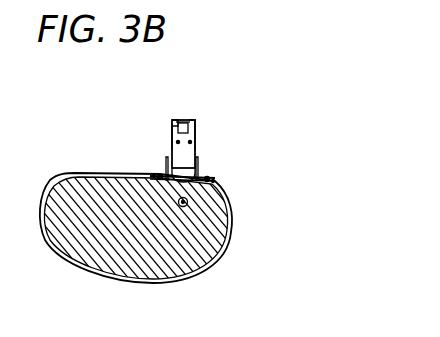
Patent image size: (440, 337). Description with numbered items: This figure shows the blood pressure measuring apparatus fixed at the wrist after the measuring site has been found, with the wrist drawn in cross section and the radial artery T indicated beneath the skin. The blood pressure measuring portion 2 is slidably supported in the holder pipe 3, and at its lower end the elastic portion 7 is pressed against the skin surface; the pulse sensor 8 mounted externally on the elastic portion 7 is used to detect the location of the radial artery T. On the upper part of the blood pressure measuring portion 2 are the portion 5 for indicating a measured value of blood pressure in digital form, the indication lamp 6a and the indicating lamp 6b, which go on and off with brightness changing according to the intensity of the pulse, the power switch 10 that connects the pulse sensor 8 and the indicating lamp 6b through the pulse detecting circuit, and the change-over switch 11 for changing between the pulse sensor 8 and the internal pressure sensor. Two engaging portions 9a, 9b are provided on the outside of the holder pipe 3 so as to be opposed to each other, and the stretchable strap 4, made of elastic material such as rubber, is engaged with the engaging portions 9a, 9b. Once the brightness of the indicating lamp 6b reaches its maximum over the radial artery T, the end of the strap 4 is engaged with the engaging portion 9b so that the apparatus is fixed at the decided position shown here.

The blood pressure measuring portion 2 is at (171, 145).
The holder pipe 3 is at (201, 158).
The strap 4 is at (165, 284).
The portion for indicating a measured value of blood pressure 5 is at (197, 121).
The indication lamp 6a is at (172, 129).
The indicating lamp 6b is at (197, 135).
The elastic portion 7 is at (210, 168).
The pulse sensor 8 is at (166, 171).
The engaging portion 9a is at (158, 174).
The engaging portion 9b is at (212, 178).
The power switch 10 is at (172, 123).
The change-over switch 11 is at (183, 121).
The radial artery T is at (187, 203).